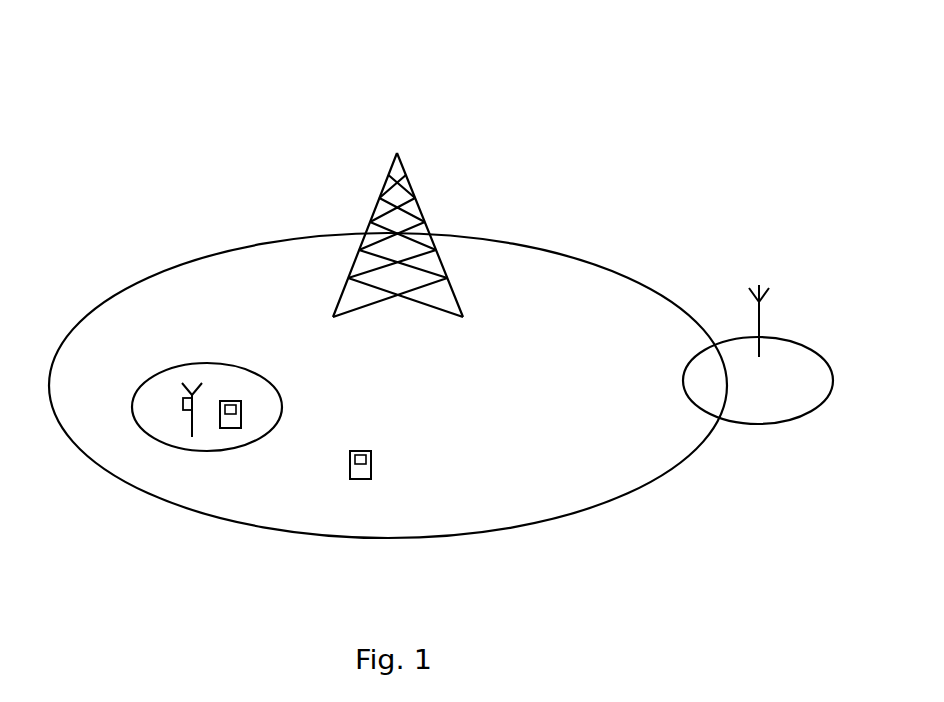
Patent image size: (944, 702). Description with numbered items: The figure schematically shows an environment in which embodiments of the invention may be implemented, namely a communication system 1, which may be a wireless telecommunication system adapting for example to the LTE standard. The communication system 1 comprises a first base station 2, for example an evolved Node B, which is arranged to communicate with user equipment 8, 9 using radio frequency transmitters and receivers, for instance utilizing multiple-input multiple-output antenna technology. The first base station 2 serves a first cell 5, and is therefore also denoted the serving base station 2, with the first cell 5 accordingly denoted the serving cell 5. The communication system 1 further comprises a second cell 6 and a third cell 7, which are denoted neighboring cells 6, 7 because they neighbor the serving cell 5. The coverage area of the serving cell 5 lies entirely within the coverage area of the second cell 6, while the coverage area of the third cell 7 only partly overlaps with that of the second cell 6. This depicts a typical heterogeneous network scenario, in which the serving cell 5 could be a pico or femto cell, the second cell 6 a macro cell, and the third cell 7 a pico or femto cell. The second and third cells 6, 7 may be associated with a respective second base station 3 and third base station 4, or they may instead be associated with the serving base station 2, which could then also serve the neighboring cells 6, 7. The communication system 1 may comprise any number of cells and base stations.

The communication system 1 is at (693, 82).
The first base station 2 is at (188, 415).
The second base station 3 is at (412, 183).
The third base station 4 is at (759, 317).
The first cell 5 is at (277, 392).
The second cell 6 is at (582, 260).
The third cell 7 is at (759, 424).
The user equipment 8 is at (233, 423).
The user equipment 9 is at (363, 473).